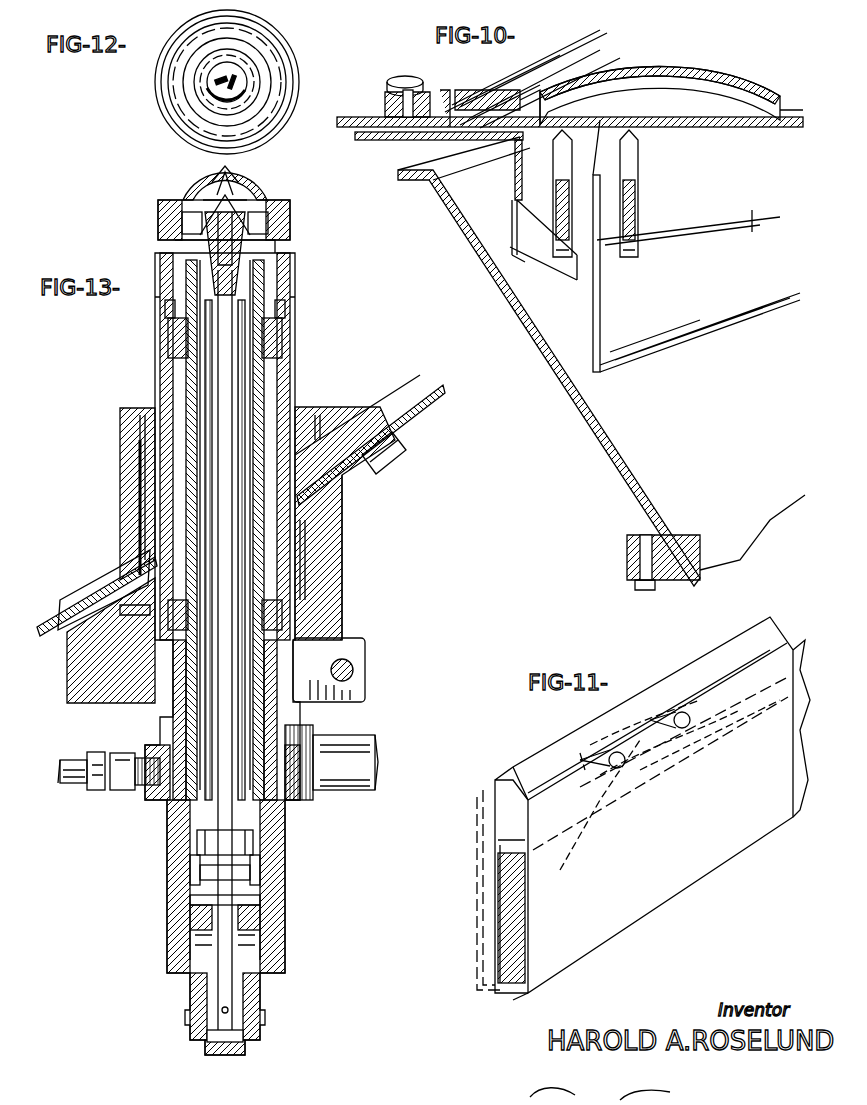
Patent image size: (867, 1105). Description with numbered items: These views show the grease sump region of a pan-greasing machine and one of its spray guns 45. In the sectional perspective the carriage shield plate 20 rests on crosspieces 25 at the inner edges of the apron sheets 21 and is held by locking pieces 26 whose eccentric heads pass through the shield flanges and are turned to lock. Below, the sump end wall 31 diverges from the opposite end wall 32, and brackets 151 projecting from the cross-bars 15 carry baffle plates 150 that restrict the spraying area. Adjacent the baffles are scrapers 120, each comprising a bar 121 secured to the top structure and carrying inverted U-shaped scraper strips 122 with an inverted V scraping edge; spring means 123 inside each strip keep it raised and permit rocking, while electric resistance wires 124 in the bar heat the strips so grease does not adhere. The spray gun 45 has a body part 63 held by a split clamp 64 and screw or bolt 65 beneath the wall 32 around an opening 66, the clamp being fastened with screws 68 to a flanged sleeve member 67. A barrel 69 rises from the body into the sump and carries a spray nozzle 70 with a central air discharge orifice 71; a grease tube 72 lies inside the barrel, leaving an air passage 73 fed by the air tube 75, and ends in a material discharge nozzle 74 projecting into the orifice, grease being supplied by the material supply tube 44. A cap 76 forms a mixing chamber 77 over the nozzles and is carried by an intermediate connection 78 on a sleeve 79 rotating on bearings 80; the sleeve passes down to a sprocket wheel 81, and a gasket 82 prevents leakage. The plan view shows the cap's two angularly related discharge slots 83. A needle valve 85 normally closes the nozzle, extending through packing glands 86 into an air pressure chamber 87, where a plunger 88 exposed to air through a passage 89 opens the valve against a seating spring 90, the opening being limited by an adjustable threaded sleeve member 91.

In FIG. 10, the cross-bars 15 is at (497, 150).
In FIG. 10, the shield plate 20 is at (472, 75).
In FIG. 10, the apron sheet 21 is at (365, 118).
In FIG. 10, the crosspieces 25 is at (740, 50).
In FIG. 10, the locking pieces 26 is at (405, 78).
In FIG. 10, the end wall 31 is at (572, 380).
In FIG. 13, the end wall 32 is at (425, 400).
In FIG. 13, the material supply tube 44 is at (350, 786).
In FIG. 13, the spray gun 45 is at (300, 345).
In FIG. 13, the body part 63 is at (268, 828).
In FIG. 13, the split clamp 64 is at (335, 648).
In FIG. 13, the screw or bolt 65 is at (355, 668).
In FIG. 13, the opening 66 is at (140, 545).
In FIG. 13, the sleeve member 67 is at (122, 450).
In FIG. 13, the screws 68 is at (396, 456).
In FIG. 13, the barrel 69 is at (283, 555).
In FIG. 13, the spray nozzle 70 is at (283, 282).
In FIG. 13, the air discharge orifice 71 is at (215, 200).
In FIG. 13, the tube 72 is at (192, 390).
In FIG. 13, the air passage 73 is at (205, 402).
In FIG. 13, the material discharge nozzle 74 is at (255, 265).
In FIG. 13, the tube 75 is at (70, 765).
In FIG. 12, the cap 76 is at (170, 105).
In FIG. 13, the cap 76 is at (258, 205).
In FIG. 13, the mixing chamber 77 is at (248, 195).
In FIG. 13, the intermediate connection 78 is at (290, 300).
In FIG. 13, the sleeve 79 is at (170, 345).
In FIG. 13, the bearings 80 is at (170, 335).
In FIG. 13, the sprocket wheel 81 is at (100, 645).
In FIG. 13, the gasket 82 is at (312, 412).
In FIG. 12, the slots 83 is at (225, 82).
In FIG. 13, the slots 83 is at (232, 180).
In FIG. 13, the needle valve 85 is at (228, 313).
In FIG. 13, the packing glands 86 is at (213, 818).
In FIG. 13, the air pressure chamber 87 is at (258, 905).
In FIG. 13, the plunger 88 is at (190, 925).
In FIG. 13, the passage 89 is at (195, 860).
In FIG. 13, the seating spring 90 is at (258, 945).
In FIG. 13, the sleeve member 91 is at (200, 1022).
In FIG. 10, the scrapers 120 is at (690, 238).
In FIG. 11, the scrapers 120 is at (604, 968).
In FIG. 10, the bar 121 is at (612, 257).
In FIG. 11, the bar 121 is at (525, 905).
In FIG. 10, the scraper strips 122 is at (694, 235).
In FIG. 11, the scraper strips 122 is at (745, 645).
In FIG. 11, the spring means 123 is at (730, 715).
In FIG. 11, the electric resistance wires 124 is at (505, 912).
In FIG. 10, the baffle plates 150 is at (688, 340).
In FIG. 10, the brackets 151 is at (560, 282).